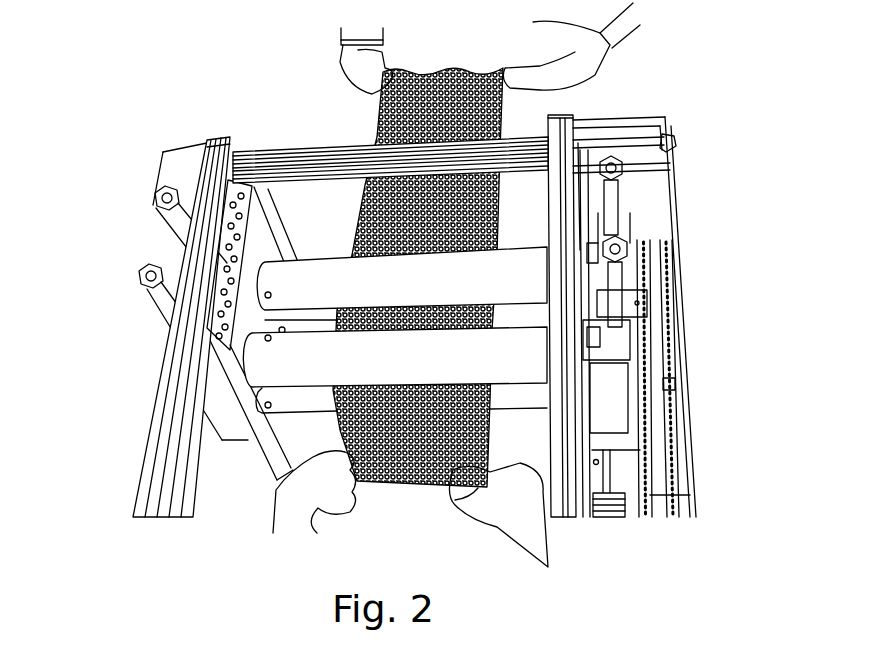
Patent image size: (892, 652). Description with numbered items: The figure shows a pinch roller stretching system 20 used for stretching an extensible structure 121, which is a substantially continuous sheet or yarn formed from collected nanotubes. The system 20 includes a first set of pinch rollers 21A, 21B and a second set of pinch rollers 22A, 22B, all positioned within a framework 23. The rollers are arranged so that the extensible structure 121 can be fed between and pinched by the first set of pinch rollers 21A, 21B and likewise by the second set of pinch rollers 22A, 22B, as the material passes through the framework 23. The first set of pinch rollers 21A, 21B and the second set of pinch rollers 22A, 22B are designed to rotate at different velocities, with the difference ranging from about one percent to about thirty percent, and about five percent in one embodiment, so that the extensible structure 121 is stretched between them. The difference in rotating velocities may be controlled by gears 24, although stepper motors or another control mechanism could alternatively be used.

The system 20 is at (720, 116).
The first set pinch roller 21A is at (262, 355).
The first set pinch roller 21B is at (290, 398).
The second set pinch roller 22A is at (230, 221).
The second set pinch roller 22B is at (283, 321).
The framework 23 is at (290, 218).
The gears 24 is at (637, 396).
The extensible structure 121 is at (377, 137).